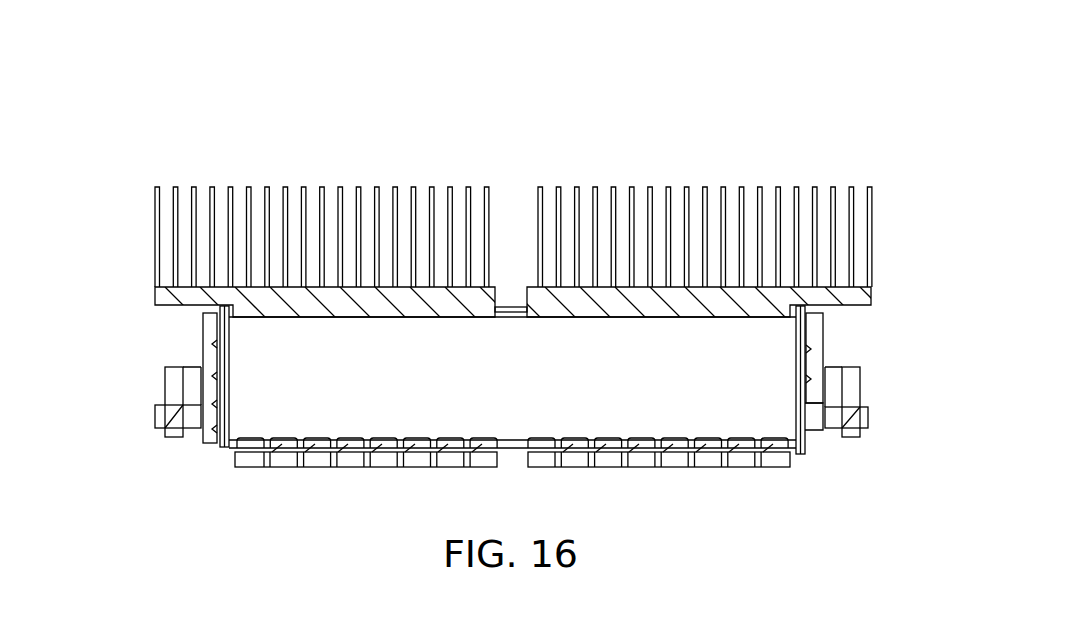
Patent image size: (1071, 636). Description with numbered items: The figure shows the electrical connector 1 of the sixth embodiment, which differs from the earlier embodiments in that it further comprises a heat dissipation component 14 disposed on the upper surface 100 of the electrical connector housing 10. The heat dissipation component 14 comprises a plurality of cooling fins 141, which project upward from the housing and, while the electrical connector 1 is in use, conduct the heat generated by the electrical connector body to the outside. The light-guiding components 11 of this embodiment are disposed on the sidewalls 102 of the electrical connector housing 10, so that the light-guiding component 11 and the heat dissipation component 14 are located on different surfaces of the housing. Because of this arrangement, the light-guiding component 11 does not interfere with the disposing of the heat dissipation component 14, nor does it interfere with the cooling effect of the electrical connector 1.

The electrical connector 1 is at (166, 86).
The electrical connector housing 10 is at (218, 450).
The upper surface 100 is at (228, 315).
The sidewalls 102 is at (216, 432).
The light-guiding component 11 is at (138, 413).
The heat dissipation component 14 is at (871, 297).
The cooling fins 141 is at (488, 205).